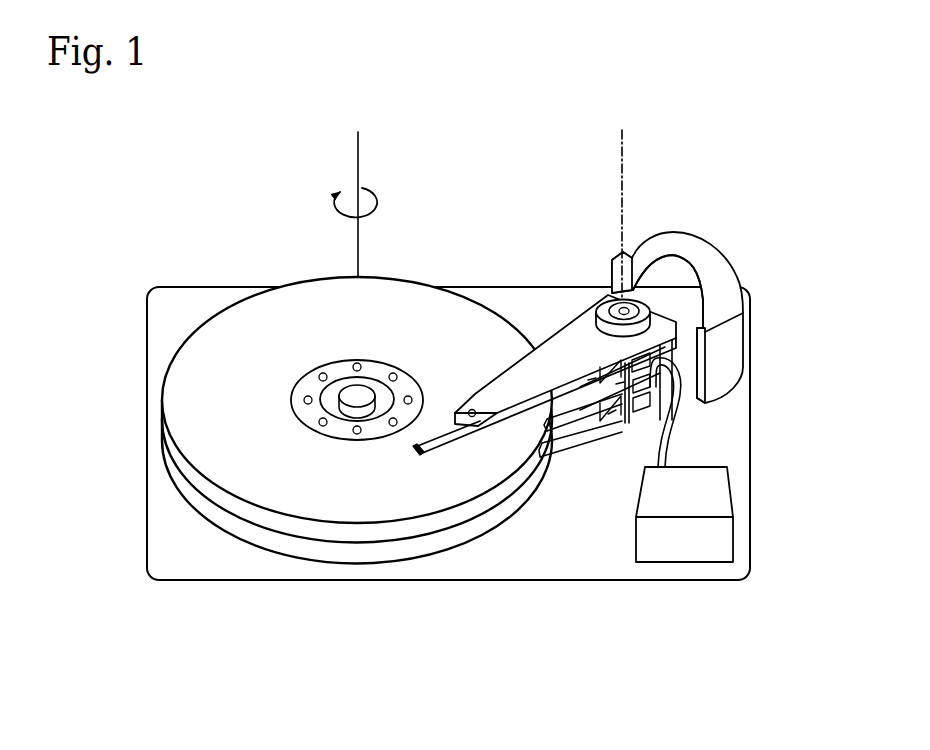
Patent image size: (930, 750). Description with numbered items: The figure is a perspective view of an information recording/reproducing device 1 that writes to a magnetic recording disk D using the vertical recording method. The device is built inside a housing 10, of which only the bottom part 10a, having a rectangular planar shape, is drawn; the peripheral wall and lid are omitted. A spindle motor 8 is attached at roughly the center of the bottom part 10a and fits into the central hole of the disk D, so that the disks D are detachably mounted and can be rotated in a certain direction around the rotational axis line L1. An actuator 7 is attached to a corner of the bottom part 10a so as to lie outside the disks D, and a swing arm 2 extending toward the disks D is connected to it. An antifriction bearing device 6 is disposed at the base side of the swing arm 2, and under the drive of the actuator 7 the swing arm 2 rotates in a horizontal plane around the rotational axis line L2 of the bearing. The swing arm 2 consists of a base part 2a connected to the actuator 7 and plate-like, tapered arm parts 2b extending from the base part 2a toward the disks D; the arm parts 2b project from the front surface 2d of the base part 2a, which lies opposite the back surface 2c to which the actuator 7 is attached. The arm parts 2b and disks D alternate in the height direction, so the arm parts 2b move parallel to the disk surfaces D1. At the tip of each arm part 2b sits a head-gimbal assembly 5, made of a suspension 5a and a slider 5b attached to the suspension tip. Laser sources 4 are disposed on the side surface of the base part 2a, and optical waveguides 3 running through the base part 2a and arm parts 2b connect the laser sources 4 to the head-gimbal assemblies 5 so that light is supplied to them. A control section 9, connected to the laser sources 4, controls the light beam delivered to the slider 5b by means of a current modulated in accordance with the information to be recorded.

The information recording/reproducing device 1 is at (218, 206).
The swing arm 2 is at (525, 380).
The base part 2a is at (706, 332).
The arm parts 2b is at (497, 387).
The back surface 2c is at (670, 303).
The front surface 2d is at (608, 372).
The optical waveguides 3 is at (620, 383).
The laser sources 4 is at (676, 342).
The head-gimbal assemblies 5 is at (397, 667).
The suspension 5a is at (443, 440).
The slider 5b is at (415, 454).
The antifriction bearing device 6 is at (632, 290).
The actuator 7 is at (705, 297).
The spindle motor 8 is at (357, 392).
The control section 9 is at (722, 545).
The housing 10 is at (548, 584).
The bottom part 10a is at (510, 574).
The disk D is at (222, 500).
The disk surfaces D1 is at (272, 483).
The rotational axis line L1 is at (361, 167).
The rotational axis line L2 is at (624, 166).